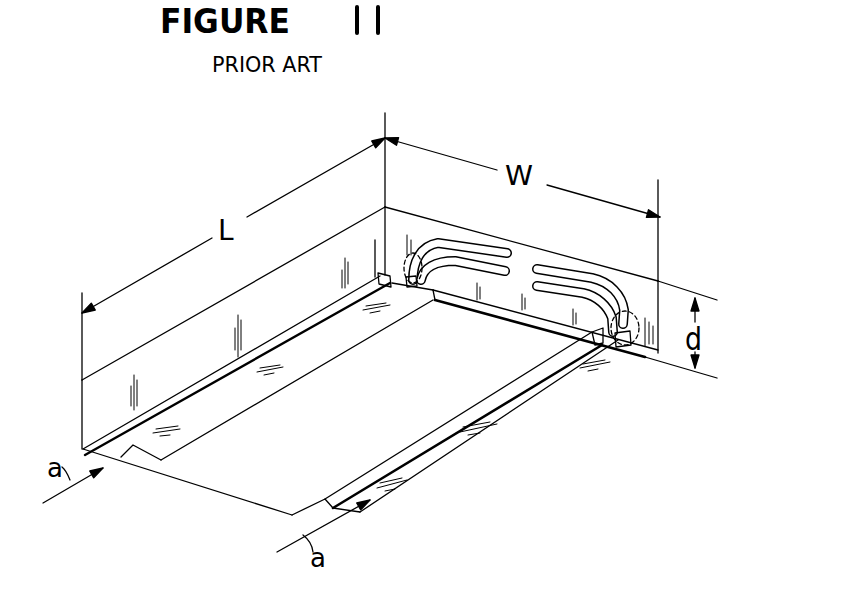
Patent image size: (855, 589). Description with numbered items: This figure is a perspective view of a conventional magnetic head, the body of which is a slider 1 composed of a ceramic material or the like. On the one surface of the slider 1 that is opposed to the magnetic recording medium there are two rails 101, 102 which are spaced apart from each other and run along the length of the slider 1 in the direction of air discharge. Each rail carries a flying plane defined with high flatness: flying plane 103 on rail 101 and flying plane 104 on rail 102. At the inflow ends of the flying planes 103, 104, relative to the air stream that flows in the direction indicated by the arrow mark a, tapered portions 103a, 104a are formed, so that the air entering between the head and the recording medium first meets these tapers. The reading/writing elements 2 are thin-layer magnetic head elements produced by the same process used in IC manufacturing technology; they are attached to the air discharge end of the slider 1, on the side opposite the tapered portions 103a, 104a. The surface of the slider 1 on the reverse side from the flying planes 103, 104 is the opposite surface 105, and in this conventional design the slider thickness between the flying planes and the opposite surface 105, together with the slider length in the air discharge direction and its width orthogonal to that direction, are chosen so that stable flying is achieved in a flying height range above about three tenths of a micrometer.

The slider 1 is at (218, 312).
The reading/writing element 2 is at (405, 257).
The rail 101 is at (183, 403).
The rail 102 is at (450, 432).
The flying plane 103 is at (298, 350).
The tapered portion 103a is at (122, 470).
The flying plane 104 is at (570, 382).
The tapered portion 104a is at (313, 520).
The opposite surface 105 is at (549, 240).